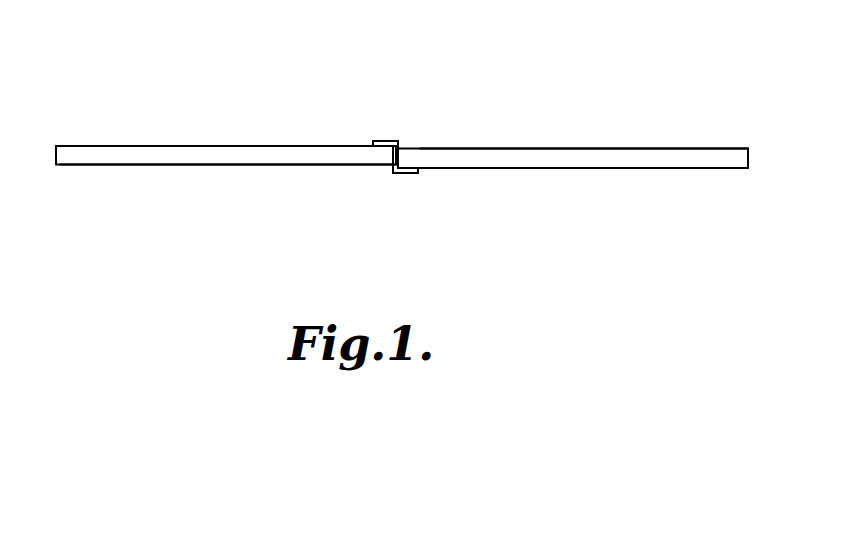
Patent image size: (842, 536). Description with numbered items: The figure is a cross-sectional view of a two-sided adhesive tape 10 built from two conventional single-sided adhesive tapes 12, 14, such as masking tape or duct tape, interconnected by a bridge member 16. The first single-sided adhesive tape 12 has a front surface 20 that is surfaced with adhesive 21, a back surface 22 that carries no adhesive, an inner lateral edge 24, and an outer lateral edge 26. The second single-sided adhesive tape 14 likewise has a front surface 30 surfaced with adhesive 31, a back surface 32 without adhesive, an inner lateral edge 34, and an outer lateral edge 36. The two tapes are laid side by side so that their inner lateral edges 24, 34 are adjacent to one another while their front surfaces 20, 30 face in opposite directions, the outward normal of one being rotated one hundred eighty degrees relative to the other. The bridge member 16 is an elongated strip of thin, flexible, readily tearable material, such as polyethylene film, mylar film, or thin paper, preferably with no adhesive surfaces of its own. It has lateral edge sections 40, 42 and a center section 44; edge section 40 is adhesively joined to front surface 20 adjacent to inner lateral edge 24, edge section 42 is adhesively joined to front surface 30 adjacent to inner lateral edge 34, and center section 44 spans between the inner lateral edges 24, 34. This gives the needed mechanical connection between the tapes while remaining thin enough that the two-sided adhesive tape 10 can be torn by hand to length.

The two-sided adhesive tape 10 is at (247, 67).
The single-sided adhesive tape 12 is at (241, 165).
The single-sided adhesive tape 14 is at (548, 149).
The bridge member 16 is at (397, 141).
The front surface 20 is at (163, 146).
The adhesive 21 is at (247, 147).
The back surface 22 is at (149, 166).
The inner lateral edge 24 is at (386, 166).
The outer lateral edge 26 is at (57, 152).
The front surface 30 is at (663, 170).
The adhesive 31 is at (545, 170).
The back surface 32 is at (613, 148).
The inner lateral edge 34 is at (430, 144).
The outer lateral edge 36 is at (750, 152).
The lateral edge section 40 is at (383, 140).
The lateral edge section 42 is at (411, 176).
The center section 44 is at (400, 142).